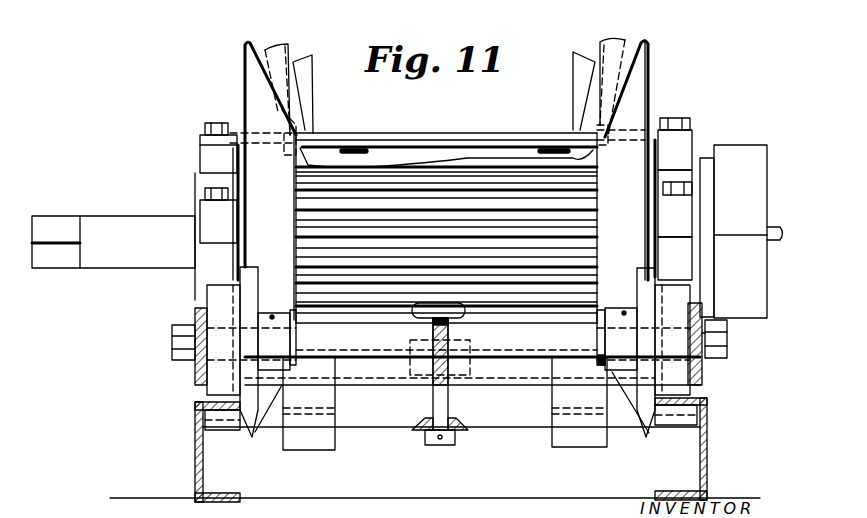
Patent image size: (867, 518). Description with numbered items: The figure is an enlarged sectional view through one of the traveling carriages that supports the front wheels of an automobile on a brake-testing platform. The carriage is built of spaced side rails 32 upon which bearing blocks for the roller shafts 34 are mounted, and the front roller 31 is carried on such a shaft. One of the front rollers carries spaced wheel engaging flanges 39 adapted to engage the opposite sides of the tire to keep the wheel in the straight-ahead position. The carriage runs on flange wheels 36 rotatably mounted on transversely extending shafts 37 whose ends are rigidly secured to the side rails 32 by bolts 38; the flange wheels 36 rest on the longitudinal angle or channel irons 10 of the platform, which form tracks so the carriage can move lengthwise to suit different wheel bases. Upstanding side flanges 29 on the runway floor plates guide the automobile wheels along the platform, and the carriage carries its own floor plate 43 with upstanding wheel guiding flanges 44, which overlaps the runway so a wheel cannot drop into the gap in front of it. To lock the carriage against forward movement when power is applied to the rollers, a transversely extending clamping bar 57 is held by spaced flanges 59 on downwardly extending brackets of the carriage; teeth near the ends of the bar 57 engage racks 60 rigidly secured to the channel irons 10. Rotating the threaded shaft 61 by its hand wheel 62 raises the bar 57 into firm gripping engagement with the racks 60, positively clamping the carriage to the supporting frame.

The angle iron 10 is at (195, 455).
The upstanding side flange 29 is at (285, 45).
The front roller 31 is at (430, 183).
The side rail 32 is at (195, 380).
The roller shaft 34 is at (144, 216).
The flange wheel 36 is at (230, 288).
The transversely extending shaft 37 is at (535, 345).
The bolt 38 is at (727, 341).
The wheel engaging flange 39 is at (245, 57).
The floor plate 43 is at (357, 133).
The wheel guiding flange 44 is at (313, 62).
The clamping bar 57 is at (405, 430).
The spaced flange 59 is at (335, 398).
The rack 60 is at (222, 420).
The threaded shaft 61 is at (448, 400).
The hand wheel 62 is at (465, 315).